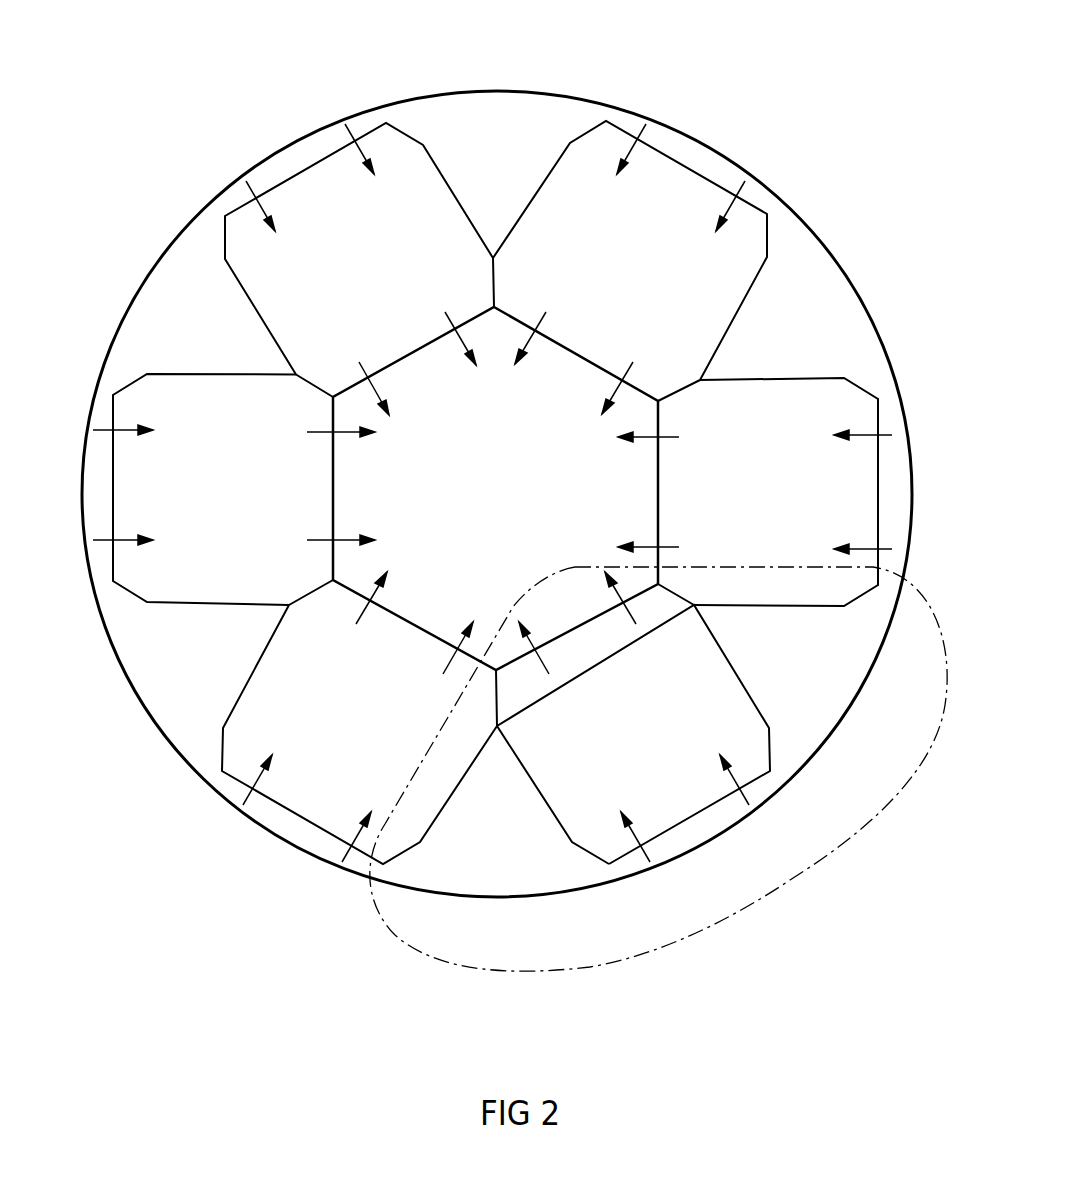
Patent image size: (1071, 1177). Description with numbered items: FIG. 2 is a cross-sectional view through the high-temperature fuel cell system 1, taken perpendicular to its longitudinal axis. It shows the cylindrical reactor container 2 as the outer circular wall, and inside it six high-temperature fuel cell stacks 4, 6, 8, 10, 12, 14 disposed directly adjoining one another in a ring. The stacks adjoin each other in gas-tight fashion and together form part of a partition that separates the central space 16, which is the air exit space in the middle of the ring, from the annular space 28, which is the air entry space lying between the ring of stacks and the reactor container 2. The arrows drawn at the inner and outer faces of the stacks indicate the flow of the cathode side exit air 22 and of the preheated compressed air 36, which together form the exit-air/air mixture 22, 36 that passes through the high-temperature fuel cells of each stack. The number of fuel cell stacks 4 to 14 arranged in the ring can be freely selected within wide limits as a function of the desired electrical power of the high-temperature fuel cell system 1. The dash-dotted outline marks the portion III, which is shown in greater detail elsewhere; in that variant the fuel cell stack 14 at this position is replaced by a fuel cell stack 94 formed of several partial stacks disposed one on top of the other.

The high-temperature fuel cell system 1 is at (497, 497).
The cylindrical reactor container 2 is at (781, 183).
The high-temperature fuel cell stack 4 is at (822, 380).
The high-temperature fuel cell stack 6 is at (160, 372).
The high-temperature fuel cell stack 8 is at (427, 148).
The high-temperature fuel cell stack 10 is at (545, 178).
The high-temperature fuel cell stack 12 is at (221, 707).
The high-temperature fuel cell stack 14 is at (633, 778).
The central space 16 is at (517, 501).
The cathode side exit air 22 is at (363, 352).
The annular space 28 is at (186, 292).
The preheated compressed air 36 is at (347, 130).
The fuel cell stack 94 is at (547, 813).
The portion III is at (827, 853).